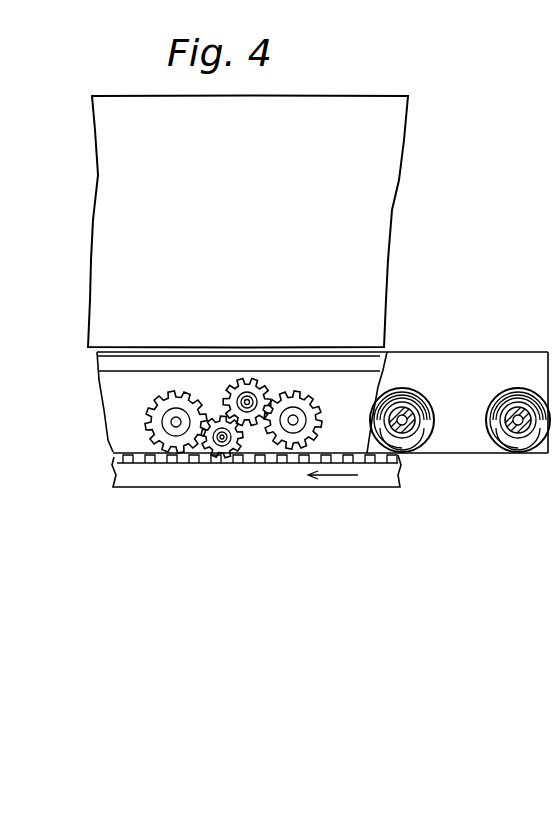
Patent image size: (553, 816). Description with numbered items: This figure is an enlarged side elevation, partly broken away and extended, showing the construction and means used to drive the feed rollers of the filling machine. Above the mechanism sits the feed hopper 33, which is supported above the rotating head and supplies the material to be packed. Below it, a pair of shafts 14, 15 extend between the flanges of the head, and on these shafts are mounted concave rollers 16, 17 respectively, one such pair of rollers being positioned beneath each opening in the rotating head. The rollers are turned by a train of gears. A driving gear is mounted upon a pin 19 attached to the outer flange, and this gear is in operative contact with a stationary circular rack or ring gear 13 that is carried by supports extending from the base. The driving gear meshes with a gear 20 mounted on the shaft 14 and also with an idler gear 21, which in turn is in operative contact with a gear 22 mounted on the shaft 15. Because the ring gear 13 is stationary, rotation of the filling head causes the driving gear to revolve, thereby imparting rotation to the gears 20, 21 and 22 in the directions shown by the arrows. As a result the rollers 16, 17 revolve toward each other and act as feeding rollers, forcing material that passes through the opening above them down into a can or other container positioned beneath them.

The circular rack or ring gear 13 is at (140, 468).
The shaft 14 is at (177, 426).
The shaft 15 is at (293, 424).
The concave roller 16 is at (222, 442).
The concave roller 17 is at (519, 432).
The pin 19 is at (223, 448).
The gear 20 is at (155, 417).
The idler gear 21 is at (249, 396).
The gear 22 is at (318, 404).
The feed hopper 33 is at (383, 208).